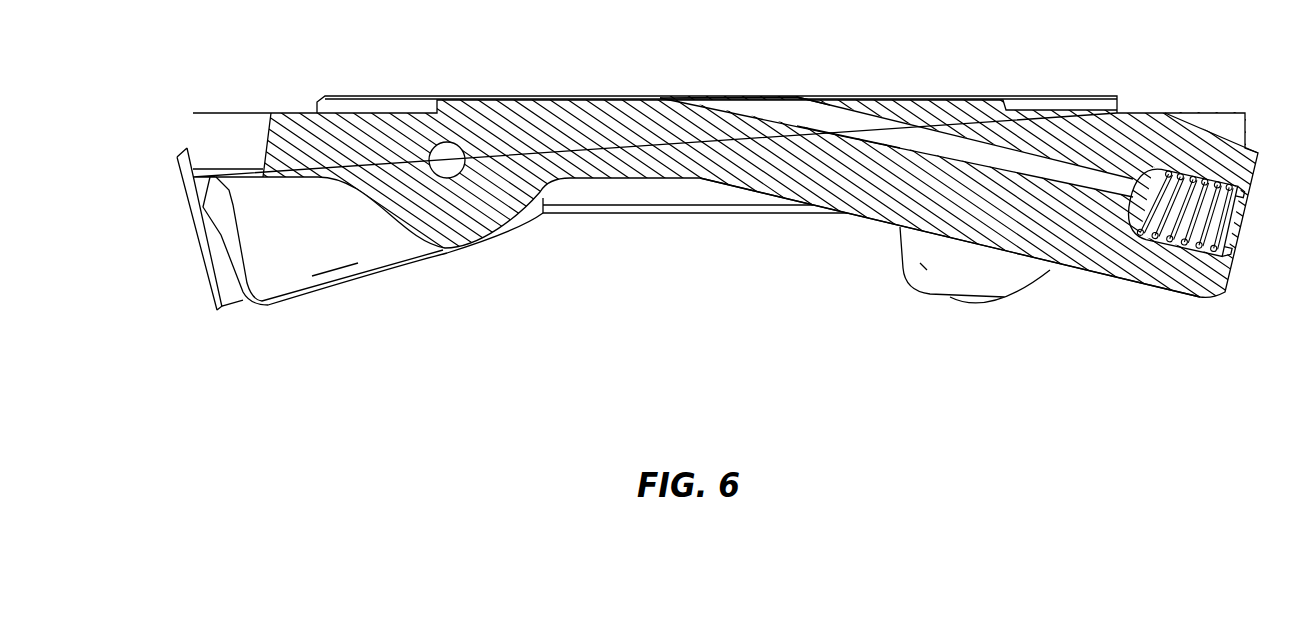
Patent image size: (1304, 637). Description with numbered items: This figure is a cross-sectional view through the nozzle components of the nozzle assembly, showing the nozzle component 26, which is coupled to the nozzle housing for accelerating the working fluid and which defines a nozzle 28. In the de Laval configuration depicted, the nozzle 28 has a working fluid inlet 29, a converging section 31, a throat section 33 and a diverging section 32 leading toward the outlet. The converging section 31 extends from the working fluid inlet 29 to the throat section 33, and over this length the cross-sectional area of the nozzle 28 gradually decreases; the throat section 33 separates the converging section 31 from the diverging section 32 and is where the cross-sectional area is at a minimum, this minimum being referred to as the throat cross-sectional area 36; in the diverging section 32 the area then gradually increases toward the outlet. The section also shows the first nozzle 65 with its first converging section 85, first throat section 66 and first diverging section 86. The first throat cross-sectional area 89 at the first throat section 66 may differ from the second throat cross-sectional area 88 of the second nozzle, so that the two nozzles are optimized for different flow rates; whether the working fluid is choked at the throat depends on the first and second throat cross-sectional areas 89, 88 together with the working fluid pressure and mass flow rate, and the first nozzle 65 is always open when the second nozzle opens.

The nozzle component 26 is at (1015, 185).
The nozzle 28 is at (975, 252).
The working fluid inlet 29 is at (1122, 205).
The converging section 31 is at (896, 124).
The diverging section 32 is at (745, 185).
The throat section 33 is at (848, 198).
The throat cross-sectional area 36 is at (965, 107).
The first nozzle 65 is at (942, 147).
The first throat section 66 is at (846, 130).
The first converging section 85 is at (976, 163).
The first diverging section 86 is at (783, 108).
The second throat cross-sectional area 88 is at (443, 180).
The first throat cross-sectional area 89 is at (853, 118).